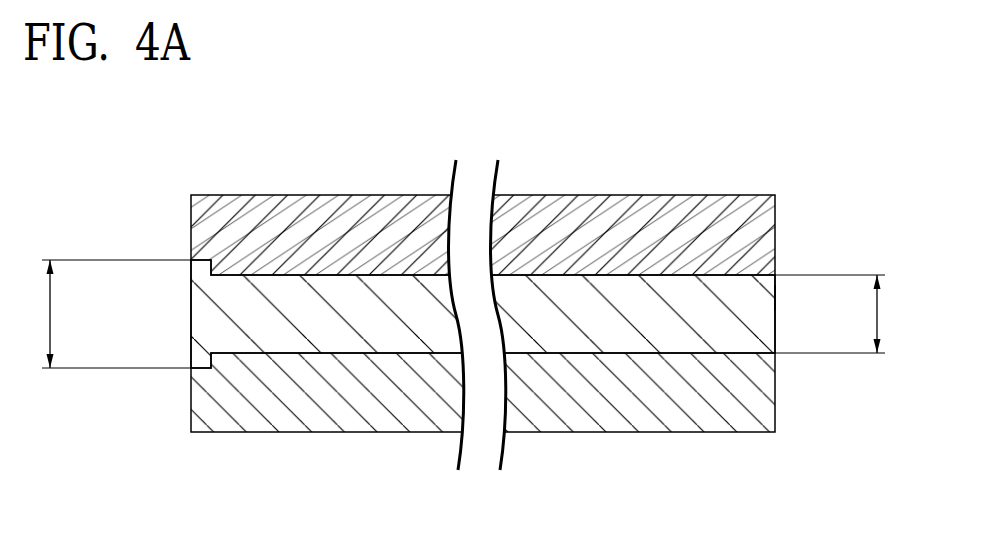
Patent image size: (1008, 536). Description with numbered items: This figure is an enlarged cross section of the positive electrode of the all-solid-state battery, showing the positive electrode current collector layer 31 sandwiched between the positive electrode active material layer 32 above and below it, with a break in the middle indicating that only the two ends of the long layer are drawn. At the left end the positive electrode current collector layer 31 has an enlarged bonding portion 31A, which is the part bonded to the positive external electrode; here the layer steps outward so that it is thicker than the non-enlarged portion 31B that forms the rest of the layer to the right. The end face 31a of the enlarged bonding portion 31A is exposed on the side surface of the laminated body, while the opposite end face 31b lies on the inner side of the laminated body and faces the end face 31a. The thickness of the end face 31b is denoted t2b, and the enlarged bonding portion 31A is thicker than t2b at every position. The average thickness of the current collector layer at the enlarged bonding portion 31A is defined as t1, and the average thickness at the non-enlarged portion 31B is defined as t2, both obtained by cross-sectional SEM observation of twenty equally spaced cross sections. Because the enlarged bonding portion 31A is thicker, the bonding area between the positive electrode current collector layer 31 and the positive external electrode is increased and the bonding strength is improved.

The positive electrode current collector layer 31 is at (421, 245).
The enlarged bonding portion 31A is at (202, 272).
The non-enlarged portion 31B is at (610, 320).
The end face 31a is at (192, 338).
The end face 31b is at (777, 340).
The positive electrode active material layer 32 is at (320, 237).
The average thickness of the current collector layer at the enlarged bonding portion t1 is at (107, 314).
The average thickness of the current collector layer in the non-enlarged portion t2 is at (842, 314).
The thickness of the end face t2b is at (777, 298).